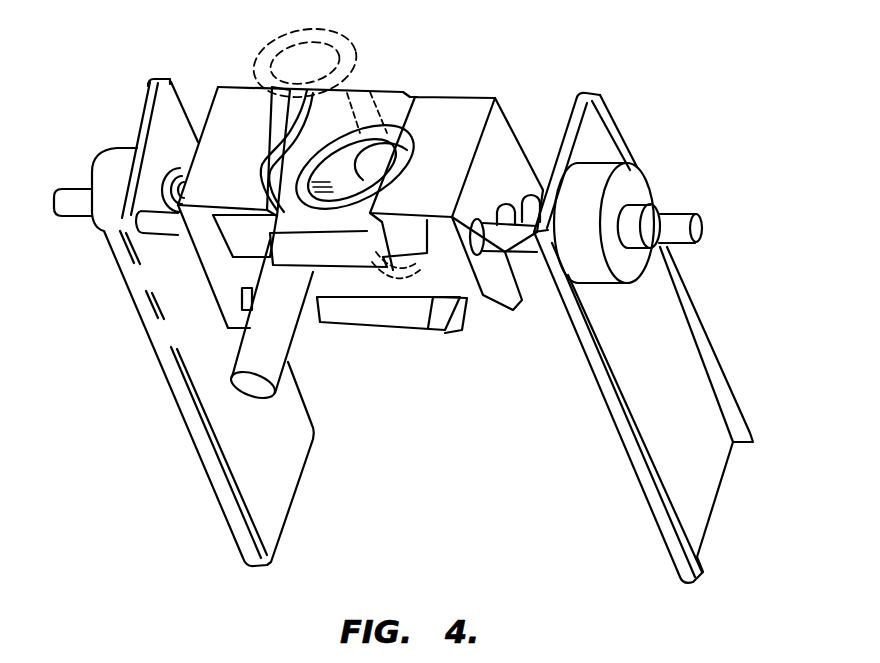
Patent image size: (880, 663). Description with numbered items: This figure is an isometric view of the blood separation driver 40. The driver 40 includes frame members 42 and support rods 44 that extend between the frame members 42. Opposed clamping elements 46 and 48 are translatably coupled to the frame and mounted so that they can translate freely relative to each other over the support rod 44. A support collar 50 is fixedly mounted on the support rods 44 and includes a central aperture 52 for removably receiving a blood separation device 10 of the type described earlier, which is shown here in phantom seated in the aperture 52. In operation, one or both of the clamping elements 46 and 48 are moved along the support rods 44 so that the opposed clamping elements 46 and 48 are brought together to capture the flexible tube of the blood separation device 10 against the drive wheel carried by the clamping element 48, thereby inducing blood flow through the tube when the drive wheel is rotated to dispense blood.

The blood separation device 10 is at (287, 40).
The blood separation driver 40 is at (696, 110).
The frame members 42 is at (677, 365).
The support rods 44 is at (167, 223).
The opposed clamping element 46 is at (462, 115).
The clamping element 48 is at (227, 285).
The support collar 50 is at (390, 100).
The central aperture 52 is at (352, 90).